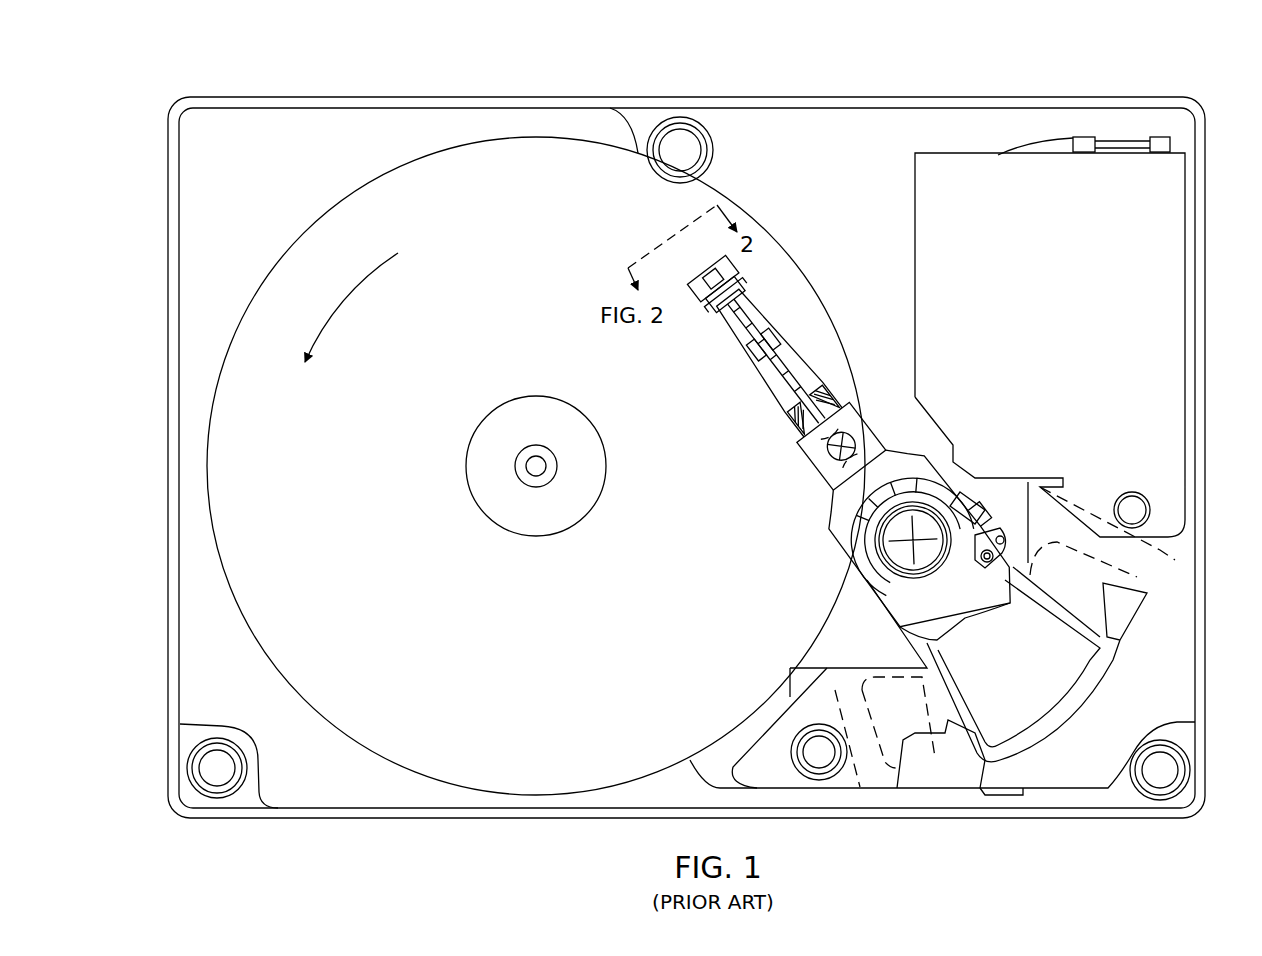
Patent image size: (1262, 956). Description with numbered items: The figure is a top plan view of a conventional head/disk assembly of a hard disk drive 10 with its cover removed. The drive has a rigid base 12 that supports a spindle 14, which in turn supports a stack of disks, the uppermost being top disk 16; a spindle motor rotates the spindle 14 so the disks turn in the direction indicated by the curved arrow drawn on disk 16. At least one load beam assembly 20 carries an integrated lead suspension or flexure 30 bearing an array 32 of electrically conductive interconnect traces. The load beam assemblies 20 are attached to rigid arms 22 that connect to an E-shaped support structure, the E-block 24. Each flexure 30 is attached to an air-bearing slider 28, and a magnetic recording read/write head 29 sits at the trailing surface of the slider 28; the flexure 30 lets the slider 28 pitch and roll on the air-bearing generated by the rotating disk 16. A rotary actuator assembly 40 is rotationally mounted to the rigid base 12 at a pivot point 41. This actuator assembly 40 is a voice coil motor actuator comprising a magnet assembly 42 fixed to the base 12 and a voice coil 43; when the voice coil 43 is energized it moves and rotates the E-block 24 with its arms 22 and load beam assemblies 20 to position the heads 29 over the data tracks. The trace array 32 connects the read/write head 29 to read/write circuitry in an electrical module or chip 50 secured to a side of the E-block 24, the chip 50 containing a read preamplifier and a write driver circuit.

The hard disk drive 10 is at (218, 84).
The rigid base 12 is at (378, 818).
The spindle 14 is at (538, 396).
The top disk 16 is at (518, 767).
The load beam assembly 20 is at (780, 438).
The rigid arm 22 is at (813, 460).
The E-block 24 is at (853, 530).
The air-bearing slider 28 is at (740, 297).
The magnetic recording read/write head 29 is at (717, 277).
The flexure 30 is at (745, 297).
The array of electrically conductive interconnect traces 32 is at (772, 352).
The rotary actuator assembly 40 is at (840, 627).
The pivot point 41 is at (905, 540).
The magnet assembly 42 is at (1057, 547).
The voice coil 43 is at (1110, 655).
The electrical module or chip 50 is at (975, 500).